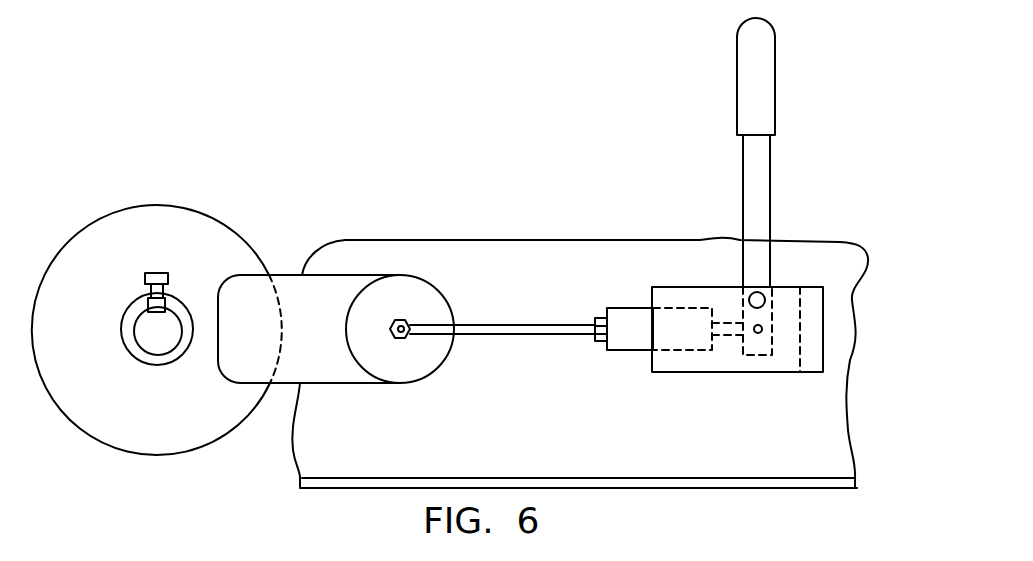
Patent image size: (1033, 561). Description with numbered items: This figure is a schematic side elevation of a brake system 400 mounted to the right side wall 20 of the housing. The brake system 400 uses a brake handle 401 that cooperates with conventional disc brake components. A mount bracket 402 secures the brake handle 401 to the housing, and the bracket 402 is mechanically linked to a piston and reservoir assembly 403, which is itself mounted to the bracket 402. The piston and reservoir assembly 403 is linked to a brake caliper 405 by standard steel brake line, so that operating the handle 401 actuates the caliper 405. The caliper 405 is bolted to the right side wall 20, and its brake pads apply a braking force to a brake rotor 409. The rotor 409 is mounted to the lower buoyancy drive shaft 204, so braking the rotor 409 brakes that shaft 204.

The right side wall 20 is at (557, 263).
The lower buoyancy drive shaft 204 is at (150, 338).
The brake system 400 is at (429, 214).
The brake handle 401 is at (757, 179).
The mount bracket 402 is at (727, 362).
The piston and reservoir assembly 403 is at (628, 320).
The brake caliper 405 is at (327, 368).
The brake rotor 409 is at (212, 236).